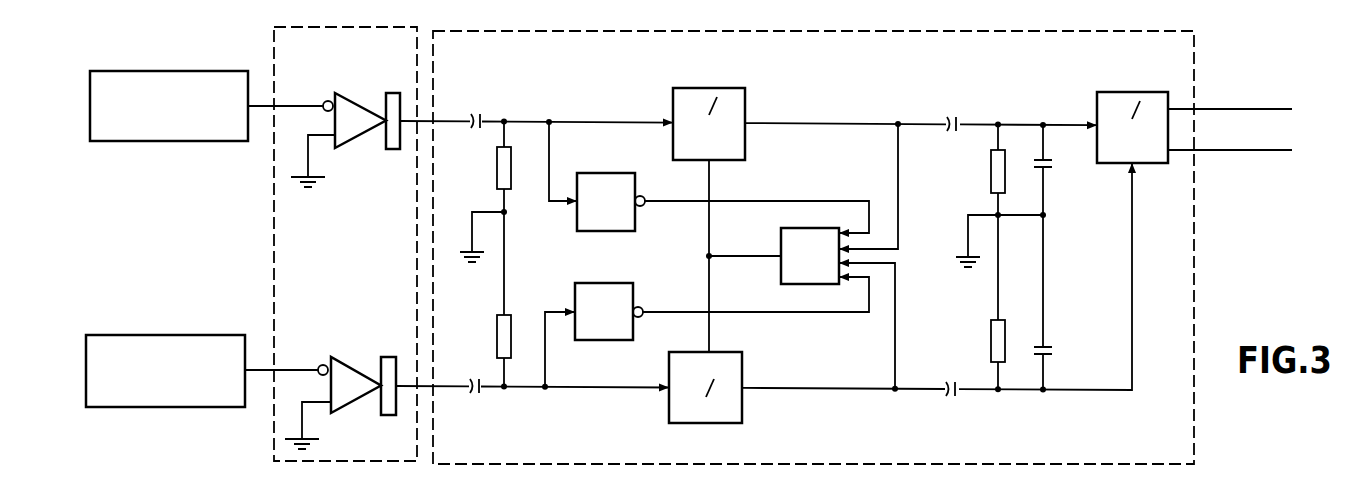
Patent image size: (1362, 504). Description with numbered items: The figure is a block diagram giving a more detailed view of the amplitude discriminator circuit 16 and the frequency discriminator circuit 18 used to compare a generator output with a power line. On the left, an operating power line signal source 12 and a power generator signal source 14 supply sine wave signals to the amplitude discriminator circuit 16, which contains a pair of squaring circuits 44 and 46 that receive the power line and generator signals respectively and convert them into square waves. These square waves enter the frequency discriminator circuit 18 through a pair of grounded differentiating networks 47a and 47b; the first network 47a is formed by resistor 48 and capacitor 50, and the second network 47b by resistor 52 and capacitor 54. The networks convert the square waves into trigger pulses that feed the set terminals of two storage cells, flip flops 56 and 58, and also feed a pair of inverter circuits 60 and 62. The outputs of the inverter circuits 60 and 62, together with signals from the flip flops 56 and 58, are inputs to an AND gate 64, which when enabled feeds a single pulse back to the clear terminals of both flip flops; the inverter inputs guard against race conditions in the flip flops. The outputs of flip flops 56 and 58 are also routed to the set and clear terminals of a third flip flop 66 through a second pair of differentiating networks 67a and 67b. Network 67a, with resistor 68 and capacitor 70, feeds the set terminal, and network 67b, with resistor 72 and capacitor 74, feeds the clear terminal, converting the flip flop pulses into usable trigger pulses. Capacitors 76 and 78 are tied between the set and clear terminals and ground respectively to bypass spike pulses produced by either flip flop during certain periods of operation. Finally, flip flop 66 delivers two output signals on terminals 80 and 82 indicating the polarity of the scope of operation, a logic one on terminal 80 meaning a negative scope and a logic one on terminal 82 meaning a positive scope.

The operating power line signal source 12 is at (232, 71).
The power generator signal source 14 is at (220, 335).
The amplitude discriminator circuit 16 is at (274, 199).
The frequency discriminator circuit 18 is at (1207, 260).
The squaring circuit 44 is at (358, 141).
The squaring circuit 46 is at (348, 358).
The differentiating network 47a is at (478, 177).
The differentiating network 47b is at (475, 352).
The resistor 48 is at (511, 183).
The capacitor 50 is at (480, 110).
The resistor 52 is at (508, 330).
The capacitor 54 is at (476, 394).
The flip flop 56 is at (748, 99).
The flip flop 58 is at (746, 366).
The inverter circuit 60 is at (594, 232).
The inverter circuit 62 is at (633, 284).
The AND gate 64 is at (780, 232).
The flip flop 66 is at (1148, 92).
The differentiating network 67a is at (958, 179).
The differentiating network 67b is at (965, 355).
The resistor 68 is at (990, 185).
The capacitor 70 is at (958, 109).
The resistor 72 is at (987, 320).
The capacitor 74 is at (950, 397).
The capacitor 76 is at (1077, 165).
The capacitor 78 is at (1052, 343).
The output terminal 80 is at (1273, 108).
The output terminal 82 is at (1272, 150).